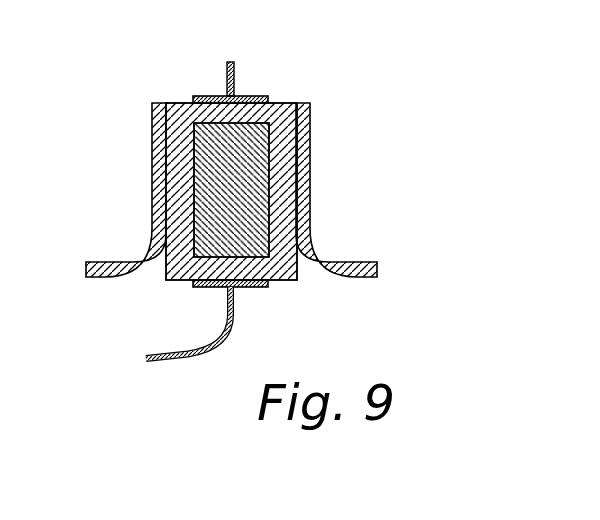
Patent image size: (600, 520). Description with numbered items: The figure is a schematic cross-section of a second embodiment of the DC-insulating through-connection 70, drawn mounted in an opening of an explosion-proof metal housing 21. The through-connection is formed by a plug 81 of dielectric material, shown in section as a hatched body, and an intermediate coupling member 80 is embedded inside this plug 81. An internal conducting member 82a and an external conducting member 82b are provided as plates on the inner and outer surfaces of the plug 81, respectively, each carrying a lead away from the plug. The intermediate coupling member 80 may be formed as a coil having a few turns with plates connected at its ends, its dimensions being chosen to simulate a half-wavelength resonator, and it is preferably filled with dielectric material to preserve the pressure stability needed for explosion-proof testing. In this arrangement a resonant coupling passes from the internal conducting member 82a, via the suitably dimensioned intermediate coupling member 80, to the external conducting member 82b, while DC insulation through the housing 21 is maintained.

The DC-insulating through-connection 70 is at (380, 150).
The explosion-proof metal housing 21 is at (313, 118).
The intermediate coupling member 80 is at (218, 201).
The plug 81 is at (163, 120).
The internal conducting member 82a is at (250, 289).
The external conducting member 82b is at (253, 96).